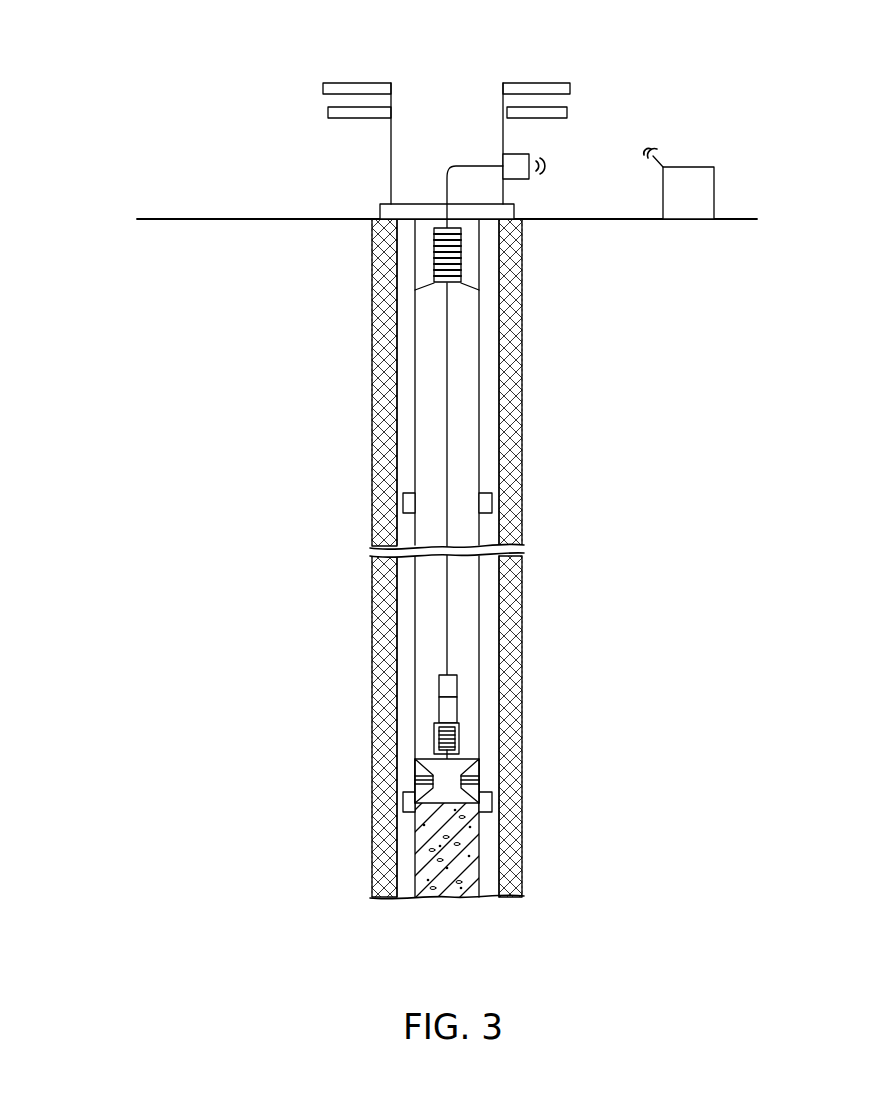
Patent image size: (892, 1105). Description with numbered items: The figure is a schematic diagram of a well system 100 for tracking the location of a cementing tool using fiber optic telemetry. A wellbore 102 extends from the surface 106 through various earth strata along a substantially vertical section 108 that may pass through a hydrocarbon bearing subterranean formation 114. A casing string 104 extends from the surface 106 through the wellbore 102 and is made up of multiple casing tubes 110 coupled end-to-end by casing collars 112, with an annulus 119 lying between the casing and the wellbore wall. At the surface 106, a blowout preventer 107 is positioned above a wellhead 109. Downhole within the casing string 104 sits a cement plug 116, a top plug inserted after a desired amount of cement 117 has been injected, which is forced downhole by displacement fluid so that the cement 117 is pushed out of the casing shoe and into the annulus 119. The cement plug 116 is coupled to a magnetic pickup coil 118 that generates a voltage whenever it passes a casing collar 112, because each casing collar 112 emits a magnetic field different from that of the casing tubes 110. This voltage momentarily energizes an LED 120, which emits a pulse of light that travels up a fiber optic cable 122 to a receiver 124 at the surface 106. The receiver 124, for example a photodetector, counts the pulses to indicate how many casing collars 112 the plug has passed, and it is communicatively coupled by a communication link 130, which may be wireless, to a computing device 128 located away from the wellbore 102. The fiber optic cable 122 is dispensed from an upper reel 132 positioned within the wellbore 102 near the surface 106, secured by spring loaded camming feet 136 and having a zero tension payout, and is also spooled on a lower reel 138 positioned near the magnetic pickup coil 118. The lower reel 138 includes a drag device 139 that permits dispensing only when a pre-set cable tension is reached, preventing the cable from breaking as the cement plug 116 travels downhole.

The well system 100 is at (150, 96).
The wellbore 102 is at (500, 265).
The casing string 104 is at (480, 385).
The surface 106 is at (208, 219).
The blowout preventer 107 is at (354, 83).
The substantially vertical section 108 is at (500, 570).
The wellhead 109 is at (380, 212).
The casing tubes 110 is at (415, 331).
The casing collars 112 is at (492, 498).
The hydrocarbon bearing subterranean formation 114 is at (198, 701).
The cement plug 116 is at (478, 765).
The cement 117 is at (420, 826).
The magnetic pickup coil 118 is at (447, 708).
The annulus 119 is at (486, 838).
The LED 120 is at (437, 688).
The fiber optic cable 122 is at (447, 440).
The receiver 124 is at (503, 162).
The computing device 128 is at (714, 197).
The communication link 130 is at (548, 166).
The upper reel 132 is at (434, 252).
The spring loaded camming feet 136 is at (470, 283).
The lower reel 138 is at (436, 738).
The drag device 139 is at (458, 736).